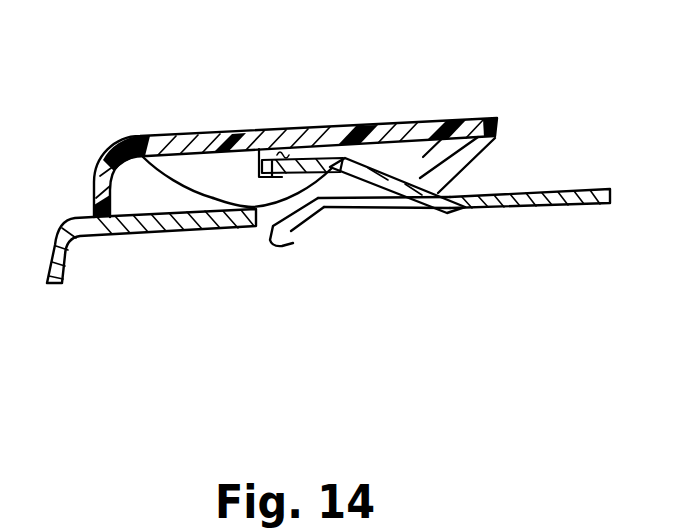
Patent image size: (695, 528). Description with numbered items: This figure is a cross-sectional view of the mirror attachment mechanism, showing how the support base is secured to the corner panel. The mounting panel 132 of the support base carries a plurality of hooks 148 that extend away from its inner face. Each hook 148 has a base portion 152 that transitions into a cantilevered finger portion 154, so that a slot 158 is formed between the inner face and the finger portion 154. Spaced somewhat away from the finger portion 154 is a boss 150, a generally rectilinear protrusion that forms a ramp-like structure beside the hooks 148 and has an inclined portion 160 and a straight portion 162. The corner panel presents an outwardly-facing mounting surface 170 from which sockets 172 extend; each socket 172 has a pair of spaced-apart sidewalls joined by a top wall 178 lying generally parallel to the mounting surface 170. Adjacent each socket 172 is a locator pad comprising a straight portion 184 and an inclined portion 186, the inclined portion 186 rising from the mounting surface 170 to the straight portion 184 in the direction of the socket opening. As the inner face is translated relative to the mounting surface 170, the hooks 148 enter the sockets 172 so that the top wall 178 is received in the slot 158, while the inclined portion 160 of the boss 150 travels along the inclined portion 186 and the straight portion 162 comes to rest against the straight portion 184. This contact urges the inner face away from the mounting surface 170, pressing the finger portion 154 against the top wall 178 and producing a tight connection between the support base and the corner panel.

The mounting panel 132 is at (139, 132).
The hook 148 is at (170, 186).
The boss 150 is at (469, 127).
The base portion 152 is at (233, 167).
The finger portion 154 is at (280, 190).
The slot 158 is at (285, 151).
The inclined portion 160 is at (500, 212).
The straight portion 162 is at (455, 127).
The mounting surface 170 is at (188, 220).
The socket 172 is at (391, 161).
The top wall 178 is at (340, 127).
The straight portion 184 is at (373, 202).
The inclined portion 186 is at (302, 213).